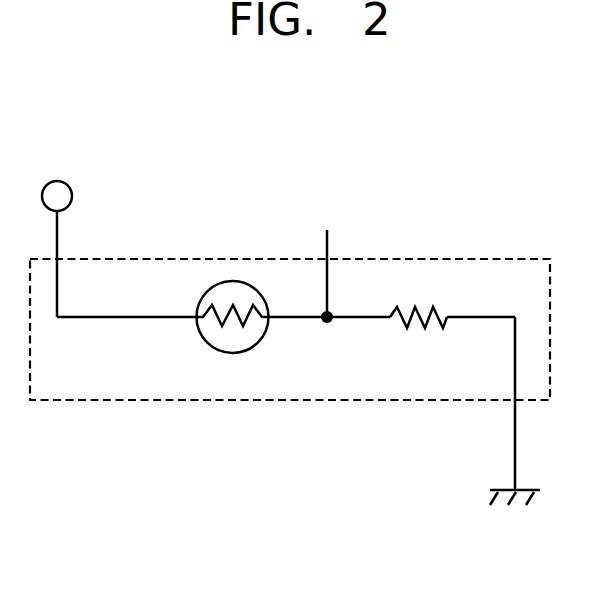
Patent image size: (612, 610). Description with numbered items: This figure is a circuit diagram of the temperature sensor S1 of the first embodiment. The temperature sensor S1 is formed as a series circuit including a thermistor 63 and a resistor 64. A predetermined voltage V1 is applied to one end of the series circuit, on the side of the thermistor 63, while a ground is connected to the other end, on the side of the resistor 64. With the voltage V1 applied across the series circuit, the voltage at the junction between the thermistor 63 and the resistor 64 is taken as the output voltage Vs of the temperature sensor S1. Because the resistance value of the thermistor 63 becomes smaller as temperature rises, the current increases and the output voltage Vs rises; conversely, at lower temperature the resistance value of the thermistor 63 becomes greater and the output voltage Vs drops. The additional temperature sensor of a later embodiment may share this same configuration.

The thermistor 63 is at (229, 282).
The resistor 64 is at (415, 307).
The temperature sensor S1 is at (117, 401).
The voltage V1 is at (59, 230).
The output voltage Vs is at (326, 257).